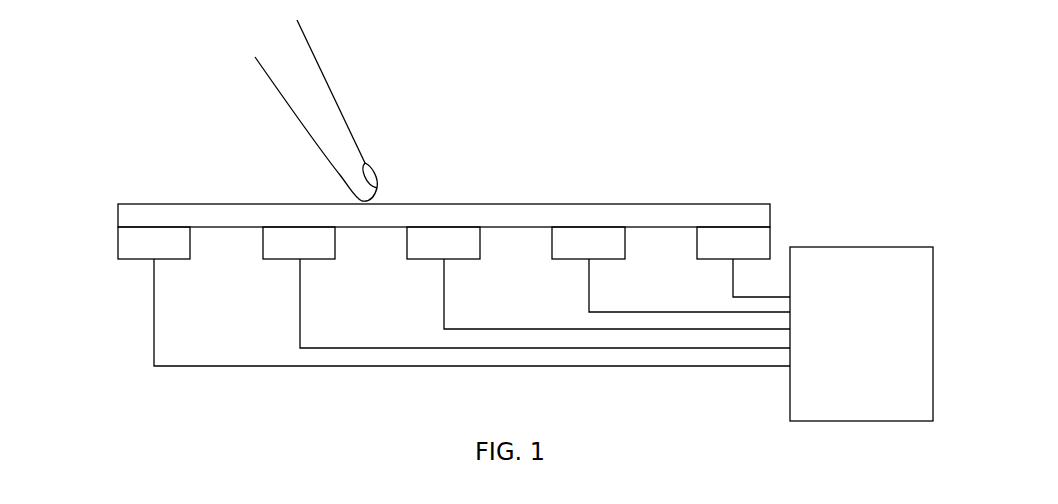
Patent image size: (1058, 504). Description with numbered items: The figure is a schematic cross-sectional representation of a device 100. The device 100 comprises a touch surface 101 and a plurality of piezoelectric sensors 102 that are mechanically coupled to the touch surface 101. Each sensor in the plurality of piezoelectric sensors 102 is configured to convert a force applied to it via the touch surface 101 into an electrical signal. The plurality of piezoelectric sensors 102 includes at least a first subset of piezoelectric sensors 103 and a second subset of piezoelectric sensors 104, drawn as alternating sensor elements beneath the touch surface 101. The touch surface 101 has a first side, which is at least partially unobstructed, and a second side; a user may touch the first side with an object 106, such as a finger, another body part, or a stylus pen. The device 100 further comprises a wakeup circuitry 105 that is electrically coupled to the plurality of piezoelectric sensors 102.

The device 100 is at (113, 82).
The touch surface 101 is at (682, 216).
The plurality of piezoelectric sensors 102 is at (83, 238).
The first subset of piezoelectric sensors 103 is at (136, 254).
The second subset of piezoelectric sensors 104 is at (281, 254).
The wakeup circuitry 105 is at (852, 419).
The object 106 is at (313, 86).